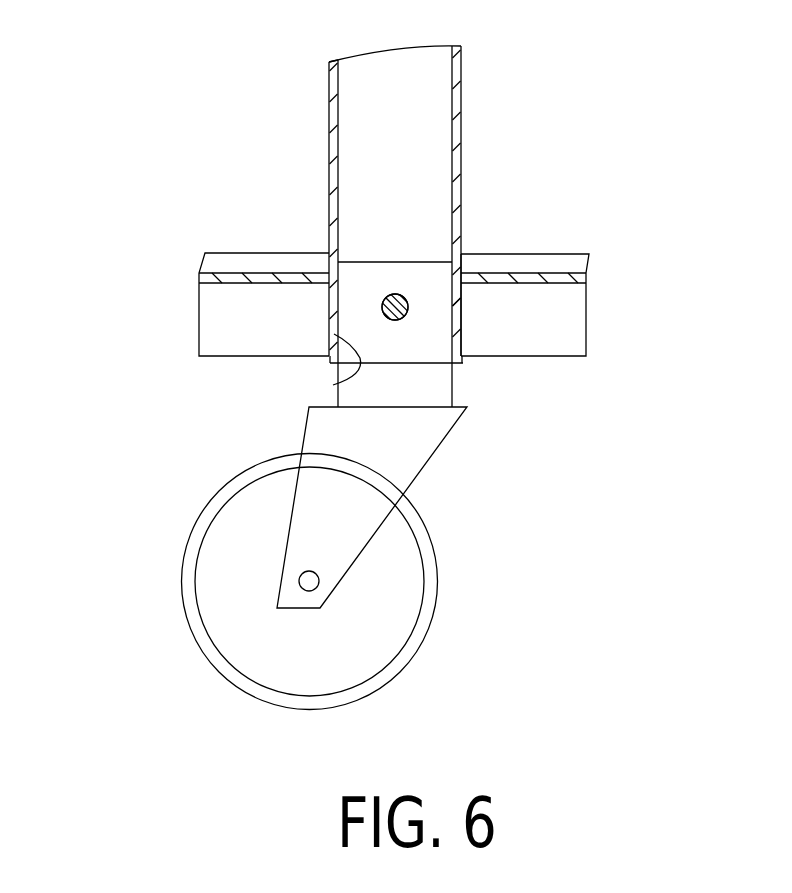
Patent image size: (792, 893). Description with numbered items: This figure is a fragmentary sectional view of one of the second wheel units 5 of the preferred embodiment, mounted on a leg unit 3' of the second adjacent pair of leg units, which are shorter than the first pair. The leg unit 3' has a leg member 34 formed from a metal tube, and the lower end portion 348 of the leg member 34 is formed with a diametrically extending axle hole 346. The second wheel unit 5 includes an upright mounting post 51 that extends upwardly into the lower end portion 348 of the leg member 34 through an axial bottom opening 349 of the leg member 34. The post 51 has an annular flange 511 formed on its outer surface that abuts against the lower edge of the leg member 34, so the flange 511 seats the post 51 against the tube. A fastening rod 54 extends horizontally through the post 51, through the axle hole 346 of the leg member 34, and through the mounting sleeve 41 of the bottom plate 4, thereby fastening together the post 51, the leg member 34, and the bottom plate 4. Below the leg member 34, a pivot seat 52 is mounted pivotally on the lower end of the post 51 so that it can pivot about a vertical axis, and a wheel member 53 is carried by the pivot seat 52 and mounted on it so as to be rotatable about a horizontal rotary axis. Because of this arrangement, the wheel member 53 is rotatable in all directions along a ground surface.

The leg unit 3' is at (390, 196).
The leg member 34 is at (461, 80).
The axle hole 346 is at (397, 294).
The lower end portion 348 is at (459, 304).
The axial bottom opening 349 is at (333, 385).
The bottom plate 4 is at (600, 268).
The mounting sleeve 41 is at (463, 317).
The second wheel unit 5 is at (340, 567).
The upright mounting post 51 is at (353, 293).
The annular flange 511 is at (428, 362).
The pivot seat 52 is at (318, 437).
The wheel member 53 is at (400, 662).
The fastening rod 54 is at (405, 297).